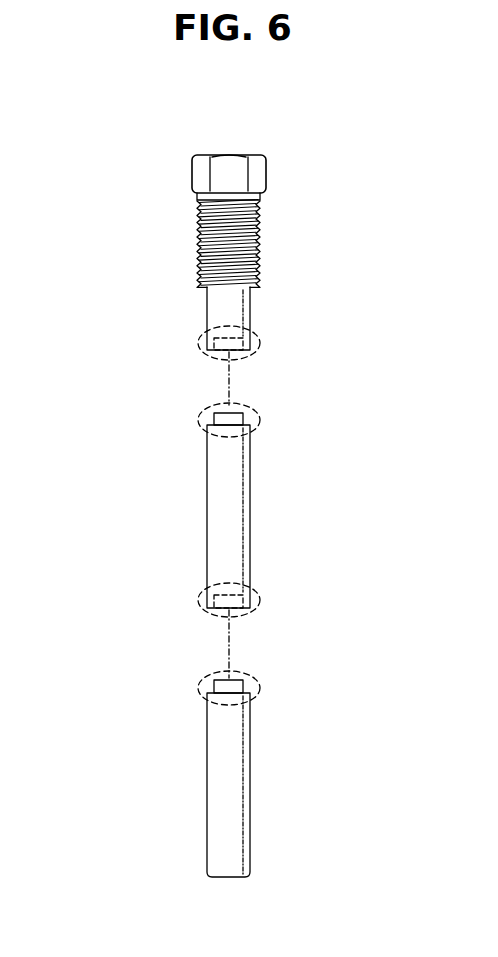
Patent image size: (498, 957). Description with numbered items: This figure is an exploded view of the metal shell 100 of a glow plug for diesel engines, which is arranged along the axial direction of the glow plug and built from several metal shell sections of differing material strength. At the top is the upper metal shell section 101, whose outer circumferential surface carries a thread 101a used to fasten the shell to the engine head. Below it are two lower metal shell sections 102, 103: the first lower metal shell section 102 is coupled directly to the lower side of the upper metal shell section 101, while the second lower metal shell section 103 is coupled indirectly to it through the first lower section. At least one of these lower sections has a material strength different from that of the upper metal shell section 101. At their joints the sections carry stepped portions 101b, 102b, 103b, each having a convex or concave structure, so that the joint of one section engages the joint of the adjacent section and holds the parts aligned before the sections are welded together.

The metal shell 100 is at (126, 228).
The upper metal shell section 101 is at (238, 304).
The thread 101a is at (256, 222).
The stepped portion 101b is at (198, 340).
The lower metal shell section 102 is at (238, 510).
The stepped portion 102b is at (198, 420).
The lower metal shell section 103 is at (238, 783).
The stepped portion 103b is at (198, 688).